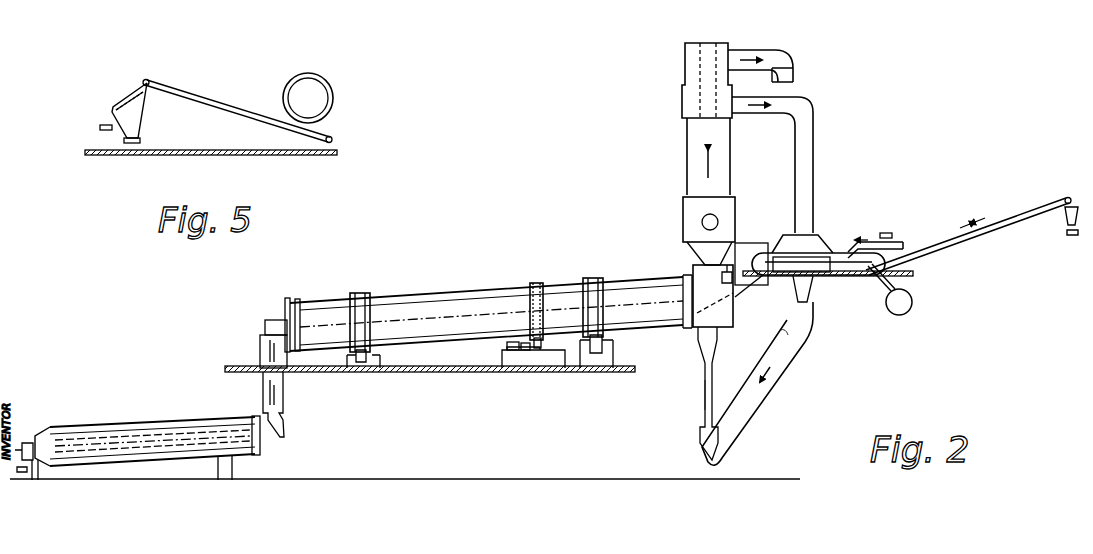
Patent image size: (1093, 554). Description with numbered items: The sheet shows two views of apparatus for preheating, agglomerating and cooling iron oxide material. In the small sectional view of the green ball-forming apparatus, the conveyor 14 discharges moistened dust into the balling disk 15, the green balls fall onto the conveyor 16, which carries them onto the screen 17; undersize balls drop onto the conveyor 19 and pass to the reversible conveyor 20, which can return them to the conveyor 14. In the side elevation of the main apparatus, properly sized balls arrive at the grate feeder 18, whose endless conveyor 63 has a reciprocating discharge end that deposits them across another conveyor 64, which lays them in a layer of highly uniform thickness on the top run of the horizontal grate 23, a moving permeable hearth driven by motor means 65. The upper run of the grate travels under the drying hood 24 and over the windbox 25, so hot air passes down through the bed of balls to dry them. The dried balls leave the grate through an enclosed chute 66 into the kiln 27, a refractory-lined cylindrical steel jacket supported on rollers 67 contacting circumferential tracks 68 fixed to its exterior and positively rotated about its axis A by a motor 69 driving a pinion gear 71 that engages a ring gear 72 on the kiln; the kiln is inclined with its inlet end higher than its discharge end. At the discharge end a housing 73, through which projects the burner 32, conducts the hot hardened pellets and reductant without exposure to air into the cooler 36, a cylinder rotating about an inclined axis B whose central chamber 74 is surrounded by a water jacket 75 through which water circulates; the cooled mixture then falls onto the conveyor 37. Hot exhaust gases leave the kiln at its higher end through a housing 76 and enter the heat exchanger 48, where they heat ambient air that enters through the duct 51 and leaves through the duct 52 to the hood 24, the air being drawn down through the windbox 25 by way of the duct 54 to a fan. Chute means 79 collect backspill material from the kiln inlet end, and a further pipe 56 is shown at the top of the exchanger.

In FIG. 2, the conveyor 14 is at (1070, 238).
In FIG. 5, the balling disk 15 is at (333, 100).
In FIG. 5, the conveyor 16 is at (221, 101).
In FIG. 5, the screen 17 is at (125, 100).
In FIG. 2, the grate feeder 18 is at (893, 220).
In FIG. 5, the conveyor 19 is at (143, 141).
In FIG. 2, the conveyor 20 is at (1015, 216).
In FIG. 2, the horizontal grate 23 is at (826, 252).
In FIG. 2, the drying hood 24 is at (787, 243).
In FIG. 2, the windbox 25 is at (833, 268).
In FIG. 2, the kiln 27 is at (482, 292).
In FIG. 2, the burner 32 is at (268, 318).
In FIG. 2, the cooler 36 is at (158, 420).
In FIG. 2, the conveyor 37 is at (22, 473).
In FIG. 2, the heat exchanger 48 is at (686, 142).
In FIG. 2, the duct 51 is at (700, 222).
In FIG. 2, the duct 52 is at (812, 137).
In FIG. 2, the duct 54 is at (793, 352).
In FIG. 2, the exhaust outlet pipe 56 is at (753, 47).
In FIG. 2, the endless conveyor 63 is at (893, 235).
In FIG. 2, the conveyor 64 is at (868, 240).
In FIG. 2, the motor means 65 is at (906, 311).
In FIG. 2, the enclosed chute 66 is at (748, 292).
In FIG. 2, the rollers 67 is at (362, 370).
In FIG. 2, the circumferential tracks 68 is at (360, 292).
In FIG. 2, the motor 69 is at (505, 346).
In FIG. 2, the pinion gear 71 is at (540, 353).
In FIG. 2, the ring gear 72 is at (538, 283).
In FIG. 2, the housing 73 is at (260, 342).
In FIG. 2, the central chamber 74 is at (173, 442).
In FIG. 2, the water jacket 75 is at (198, 428).
In FIG. 2, the housing 76 is at (731, 328).
In FIG. 2, the chute means 79 is at (704, 388).
In FIG. 2, the axis A is at (428, 300).
In FIG. 2, the inclined axis B is at (110, 427).